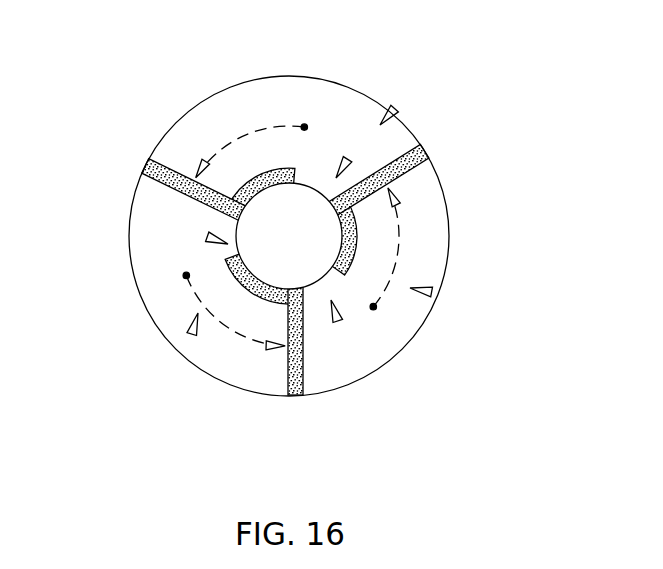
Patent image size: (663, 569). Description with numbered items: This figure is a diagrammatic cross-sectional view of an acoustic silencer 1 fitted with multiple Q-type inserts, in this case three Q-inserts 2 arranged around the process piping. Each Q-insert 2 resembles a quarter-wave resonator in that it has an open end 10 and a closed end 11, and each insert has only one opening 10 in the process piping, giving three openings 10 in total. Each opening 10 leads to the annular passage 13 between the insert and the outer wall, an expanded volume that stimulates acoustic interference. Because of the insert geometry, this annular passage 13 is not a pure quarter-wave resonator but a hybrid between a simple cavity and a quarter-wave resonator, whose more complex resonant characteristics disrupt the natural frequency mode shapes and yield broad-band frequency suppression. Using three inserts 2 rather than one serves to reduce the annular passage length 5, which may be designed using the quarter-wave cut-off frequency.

The acoustic silencer 1 is at (163, 132).
The Q-insert 2 is at (294, 168).
The annular passage length 5 is at (254, 125).
The opening 10 is at (207, 237).
The closed end 11 is at (150, 182).
The annular passage 13 is at (395, 109).